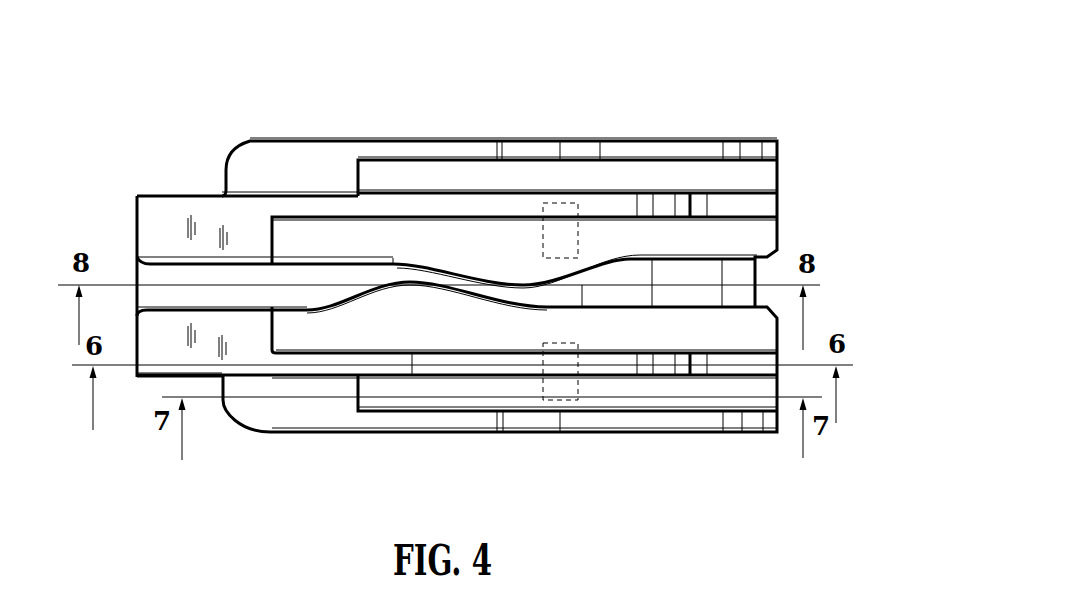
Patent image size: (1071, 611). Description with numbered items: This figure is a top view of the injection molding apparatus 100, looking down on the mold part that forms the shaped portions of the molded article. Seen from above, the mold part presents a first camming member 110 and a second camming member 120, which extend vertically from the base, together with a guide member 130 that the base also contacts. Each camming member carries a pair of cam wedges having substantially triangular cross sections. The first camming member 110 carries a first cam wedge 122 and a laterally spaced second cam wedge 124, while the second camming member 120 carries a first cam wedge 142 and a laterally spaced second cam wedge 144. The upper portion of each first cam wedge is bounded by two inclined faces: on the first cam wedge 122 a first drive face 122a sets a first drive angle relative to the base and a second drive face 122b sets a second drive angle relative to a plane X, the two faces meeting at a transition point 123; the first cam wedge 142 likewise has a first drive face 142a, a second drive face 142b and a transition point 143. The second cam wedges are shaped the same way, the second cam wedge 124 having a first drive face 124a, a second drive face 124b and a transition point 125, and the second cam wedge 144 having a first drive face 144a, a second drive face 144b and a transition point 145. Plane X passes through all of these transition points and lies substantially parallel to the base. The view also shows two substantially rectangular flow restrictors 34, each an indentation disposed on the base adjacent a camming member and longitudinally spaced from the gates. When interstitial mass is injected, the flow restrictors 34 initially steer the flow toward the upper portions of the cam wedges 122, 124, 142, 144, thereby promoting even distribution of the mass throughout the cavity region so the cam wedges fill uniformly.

The injection molding apparatus 100 is at (738, 73).
The first camming member 110 is at (767, 420).
The second camming member 120 is at (782, 143).
The guide member 130 is at (758, 270).
The flow restrictor 34 is at (542, 227).
The first cam wedge 122 is at (598, 357).
The first drive face 122a is at (290, 360).
The second drive face 122b is at (495, 358).
The transition point 123 is at (417, 357).
The second cam wedge 124 is at (665, 423).
The first drive face 124a is at (390, 425).
The second drive face 124b is at (573, 423).
The transition point 125 is at (502, 432).
The first cam wedge 142 is at (613, 205).
The first drive face 142a is at (251, 212).
The second drive face 142b is at (513, 203).
The transition point 143 is at (413, 200).
The second cam wedge 144 is at (620, 138).
The first drive face 144a is at (341, 152).
The second drive face 144b is at (575, 138).
The transition point 145 is at (498, 155).